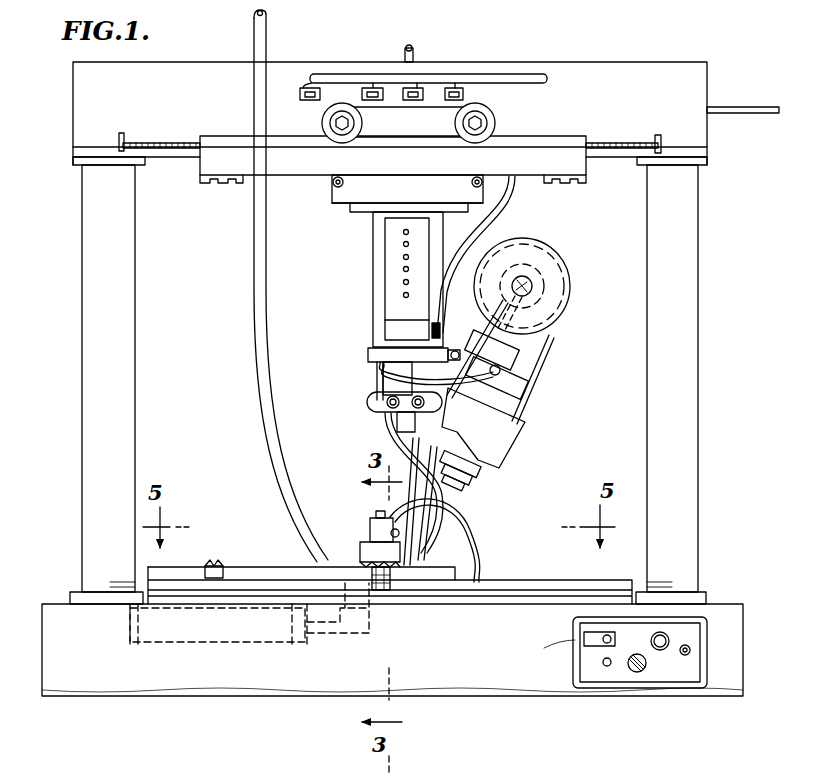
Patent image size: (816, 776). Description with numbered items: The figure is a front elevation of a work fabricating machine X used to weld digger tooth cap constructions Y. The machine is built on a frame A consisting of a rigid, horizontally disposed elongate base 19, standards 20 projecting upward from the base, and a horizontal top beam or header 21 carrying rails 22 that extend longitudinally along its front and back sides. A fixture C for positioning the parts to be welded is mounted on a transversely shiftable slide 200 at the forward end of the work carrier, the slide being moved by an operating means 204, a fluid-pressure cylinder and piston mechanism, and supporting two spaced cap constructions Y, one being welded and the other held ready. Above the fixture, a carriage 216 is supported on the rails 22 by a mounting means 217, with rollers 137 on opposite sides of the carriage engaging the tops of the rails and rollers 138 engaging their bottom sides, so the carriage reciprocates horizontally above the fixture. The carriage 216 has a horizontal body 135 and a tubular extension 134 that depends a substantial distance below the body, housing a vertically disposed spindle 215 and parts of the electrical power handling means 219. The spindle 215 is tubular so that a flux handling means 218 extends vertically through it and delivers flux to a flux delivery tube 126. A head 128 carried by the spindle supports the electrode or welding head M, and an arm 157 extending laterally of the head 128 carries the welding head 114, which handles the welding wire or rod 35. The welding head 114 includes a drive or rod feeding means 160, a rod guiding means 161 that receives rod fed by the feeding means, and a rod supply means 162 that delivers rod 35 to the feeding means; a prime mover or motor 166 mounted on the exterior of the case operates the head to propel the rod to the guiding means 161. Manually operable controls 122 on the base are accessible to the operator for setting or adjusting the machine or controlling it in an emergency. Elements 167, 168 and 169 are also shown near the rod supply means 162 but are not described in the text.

The base 19 is at (65, 620).
The standards 20 is at (125, 318).
The top beam or header 21 is at (637, 70).
The rails 22 is at (563, 136).
The welding wire or rod 35 is at (538, 362).
The welding head 114 is at (518, 438).
The manually operable controls 122 is at (578, 650).
The flux delivery tube 126 is at (392, 437).
The head 128 is at (392, 422).
The extension 134 is at (375, 256).
The body of the carriage 135 is at (407, 193).
The rollers 137 is at (322, 123).
The rollers 138 is at (343, 180).
The arm 157 is at (368, 406).
The drive or rod feeding means 160 is at (483, 428).
The rod guiding means 161 is at (435, 542).
The rod supply means 162 is at (553, 302).
The prime mover or motor 166 is at (505, 378).
The pivot ear 167 is at (483, 334).
The wheel hub 168 is at (533, 288).
The wheel rim 169 is at (545, 252).
The slide 200 is at (455, 575).
The operating means 204 is at (180, 642).
The spindle 215 is at (370, 385).
The carriage 216 is at (335, 197).
The means mounting the carriage 217 is at (498, 120).
The flux handling means 218 is at (418, 57).
The electrical power handling means 219 is at (505, 212).
The electrode or welding head M is at (368, 293).
The work fabricating machine X is at (76, 334).
The digger tooth cap construction Y is at (218, 558).
The fixture C is at (270, 560).
The frame A is at (142, 672).